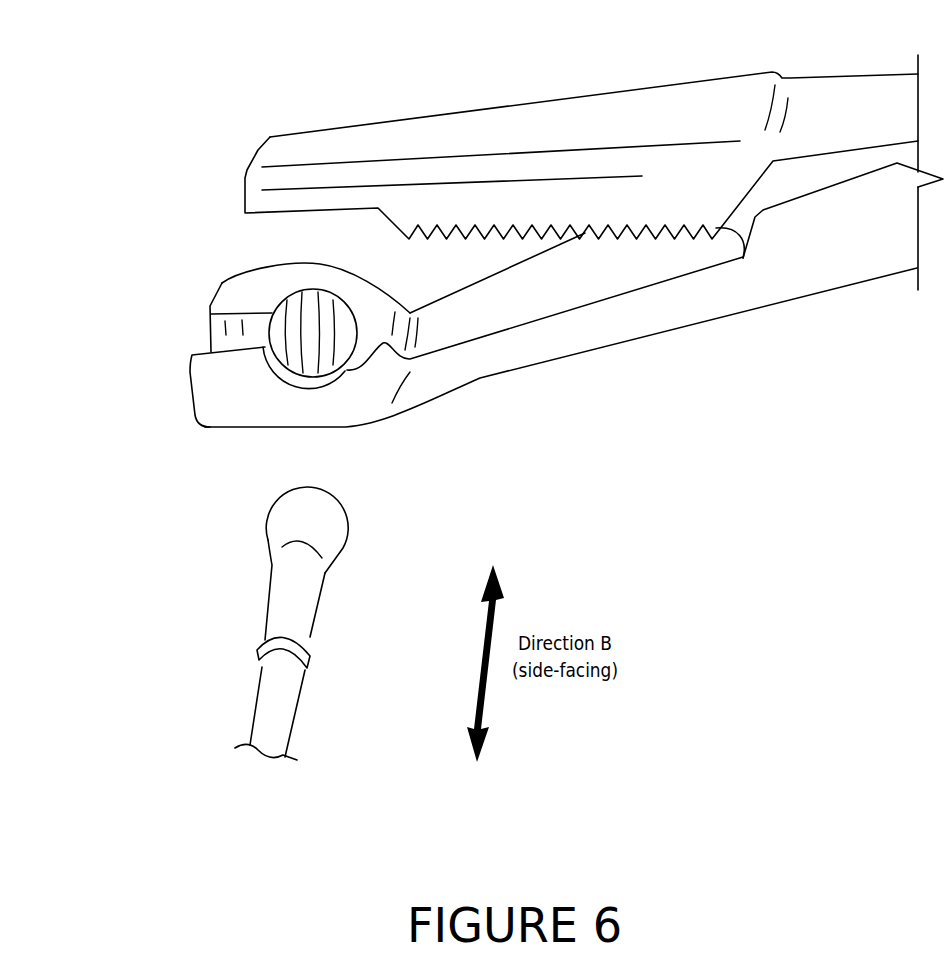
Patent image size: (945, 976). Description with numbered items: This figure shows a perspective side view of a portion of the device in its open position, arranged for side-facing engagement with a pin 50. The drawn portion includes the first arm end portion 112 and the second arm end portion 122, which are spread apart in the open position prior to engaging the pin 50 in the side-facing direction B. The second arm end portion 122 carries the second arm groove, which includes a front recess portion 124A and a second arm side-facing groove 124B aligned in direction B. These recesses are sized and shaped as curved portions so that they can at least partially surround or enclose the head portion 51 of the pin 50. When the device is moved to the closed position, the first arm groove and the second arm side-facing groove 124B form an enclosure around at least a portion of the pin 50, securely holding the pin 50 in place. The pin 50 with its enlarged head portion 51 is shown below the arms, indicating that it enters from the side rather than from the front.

The first arm end portion 112 is at (508, 70).
The second arm end portion 122 is at (556, 382).
The front recess portion 124A is at (230, 333).
The second arm side-facing groove 124B is at (313, 418).
The pin 50 is at (230, 651).
The head portion 51 is at (362, 557).